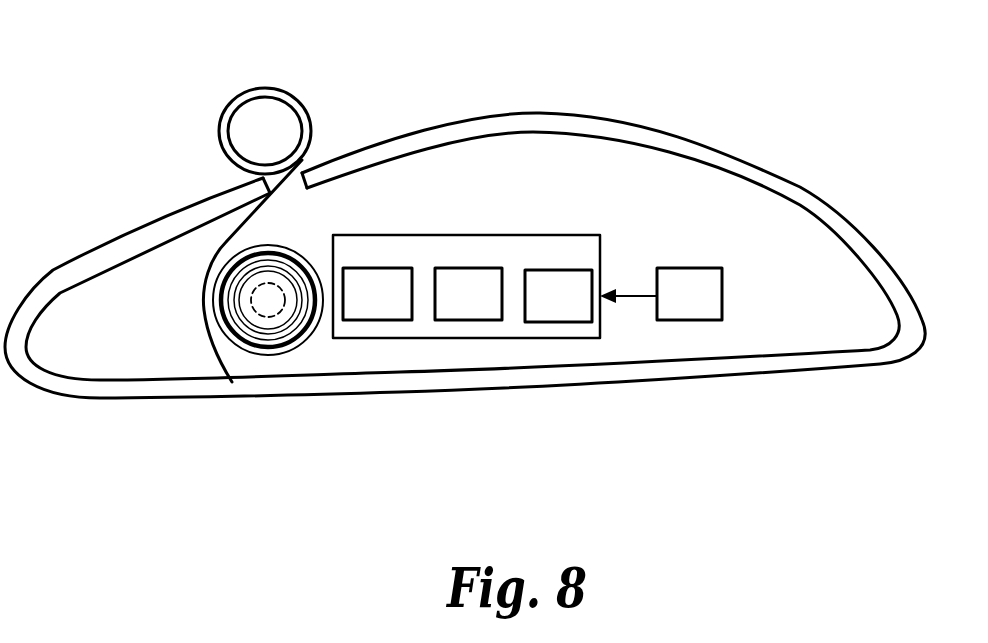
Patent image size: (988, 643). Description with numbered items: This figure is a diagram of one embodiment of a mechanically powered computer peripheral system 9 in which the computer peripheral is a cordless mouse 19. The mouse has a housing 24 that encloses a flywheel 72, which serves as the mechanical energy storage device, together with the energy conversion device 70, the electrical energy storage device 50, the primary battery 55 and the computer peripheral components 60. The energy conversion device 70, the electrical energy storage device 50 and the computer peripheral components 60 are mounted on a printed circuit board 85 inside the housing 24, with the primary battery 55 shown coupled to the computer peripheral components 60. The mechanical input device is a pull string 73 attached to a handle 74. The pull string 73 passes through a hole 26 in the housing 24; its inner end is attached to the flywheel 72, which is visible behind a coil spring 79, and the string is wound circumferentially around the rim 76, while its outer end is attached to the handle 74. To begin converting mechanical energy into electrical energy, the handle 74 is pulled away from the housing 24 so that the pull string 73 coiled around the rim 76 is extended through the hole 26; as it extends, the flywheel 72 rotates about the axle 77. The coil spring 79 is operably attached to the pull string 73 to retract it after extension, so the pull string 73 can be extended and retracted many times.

The mechanically powered computer peripheral system 9 is at (465, 270).
The cordless mouse 19 is at (465, 216).
The housing 24 is at (800, 183).
The hole 26 is at (302, 202).
The handle 74 is at (218, 128).
The pull string 73 is at (237, 230).
The coil spring 79 is at (233, 270).
The flywheel 72 is at (238, 346).
The rim 76 is at (303, 337).
The axle 77 is at (277, 350).
The printed circuit board 85 is at (466, 249).
The energy conversion device 70 is at (392, 309).
The electrical energy storage device 50 is at (484, 309).
The computer peripheral components 60 is at (574, 311).
The primary battery 55 is at (705, 309).